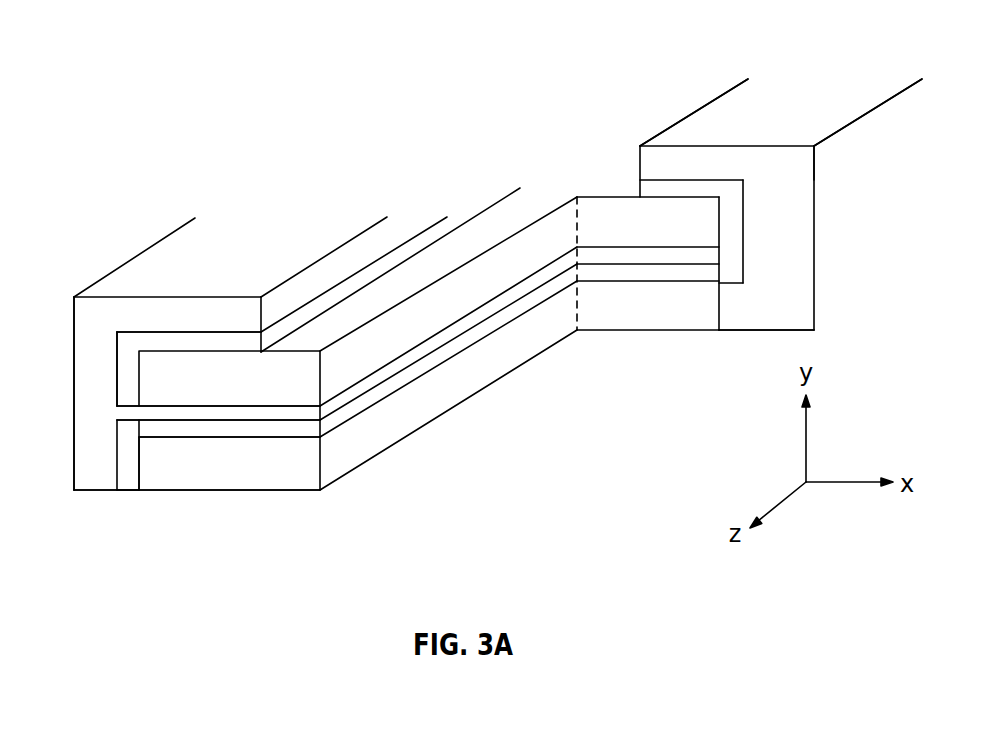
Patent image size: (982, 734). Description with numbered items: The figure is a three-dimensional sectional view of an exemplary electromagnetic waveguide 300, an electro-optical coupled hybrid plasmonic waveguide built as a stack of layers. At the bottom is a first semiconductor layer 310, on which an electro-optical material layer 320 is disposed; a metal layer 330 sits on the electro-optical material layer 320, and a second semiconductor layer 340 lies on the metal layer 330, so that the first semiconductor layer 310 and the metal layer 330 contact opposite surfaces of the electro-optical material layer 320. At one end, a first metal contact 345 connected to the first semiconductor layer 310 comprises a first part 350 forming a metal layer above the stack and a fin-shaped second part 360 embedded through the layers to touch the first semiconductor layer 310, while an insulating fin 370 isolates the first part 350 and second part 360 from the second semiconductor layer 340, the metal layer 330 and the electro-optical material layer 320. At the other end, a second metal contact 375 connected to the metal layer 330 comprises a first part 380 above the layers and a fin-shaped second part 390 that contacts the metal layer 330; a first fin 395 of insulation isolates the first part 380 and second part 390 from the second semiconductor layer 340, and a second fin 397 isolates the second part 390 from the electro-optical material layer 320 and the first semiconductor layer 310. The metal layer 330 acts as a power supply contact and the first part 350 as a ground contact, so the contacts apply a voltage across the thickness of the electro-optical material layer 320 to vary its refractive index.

The electromagnetic waveguide 300 is at (121, 26).
The first semiconductor layer 310 is at (247, 477).
The electro-optical material layer 320 is at (312, 428).
The metal layer 330 is at (305, 413).
The second semiconductor layer 340 is at (247, 393).
The first metal contact 345 is at (637, 128).
The first part 350 is at (801, 123).
The second part 360 is at (795, 252).
The fin 370 is at (730, 240).
The second metal contact 375 is at (114, 246).
The first part 380 is at (247, 272).
The second part 390 is at (90, 362).
The first fin 395 is at (128, 383).
The second fin 397 is at (131, 477).